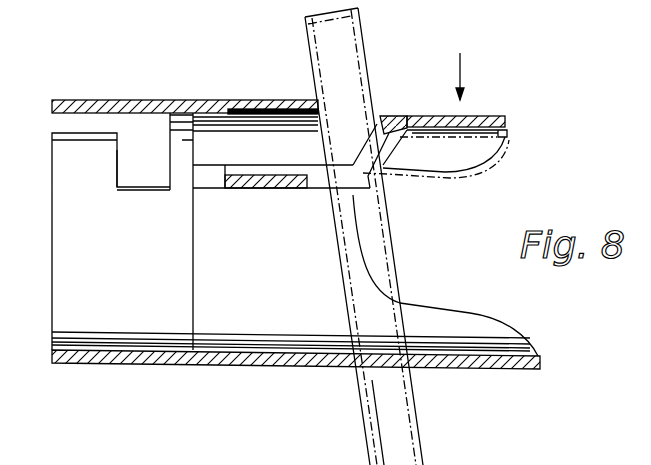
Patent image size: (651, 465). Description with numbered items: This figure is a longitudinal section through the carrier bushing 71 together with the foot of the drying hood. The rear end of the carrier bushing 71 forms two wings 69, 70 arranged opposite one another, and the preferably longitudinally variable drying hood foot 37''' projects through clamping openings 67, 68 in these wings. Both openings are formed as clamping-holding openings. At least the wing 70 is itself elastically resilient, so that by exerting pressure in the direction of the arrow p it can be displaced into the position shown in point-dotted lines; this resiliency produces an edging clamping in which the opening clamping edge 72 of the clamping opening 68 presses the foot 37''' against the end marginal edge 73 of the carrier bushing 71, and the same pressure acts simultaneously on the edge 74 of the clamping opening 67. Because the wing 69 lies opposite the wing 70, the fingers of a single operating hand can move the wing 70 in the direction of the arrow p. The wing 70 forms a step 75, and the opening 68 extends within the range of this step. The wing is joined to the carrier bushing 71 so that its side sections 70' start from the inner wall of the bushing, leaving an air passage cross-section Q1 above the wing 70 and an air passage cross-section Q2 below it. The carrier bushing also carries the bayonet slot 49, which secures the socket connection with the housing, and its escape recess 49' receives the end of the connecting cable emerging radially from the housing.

The bayonet slot 49 is at (101, 181).
The escape recess 49' is at (135, 210).
The carrier bushing 71 is at (151, 105).
The end marginal edge 73 is at (318, 105).
The air passage cross-section Q1 is at (278, 150).
The air passage cross-section Q2 is at (303, 270).
The clamping opening 68 is at (365, 172).
The opening clamping edge 72 is at (382, 115).
The wing 70 is at (489, 114).
The side sections 70' is at (272, 461).
The step 75 is at (363, 153).
The drying hood foot 37''' is at (338, 237).
The edge 74 is at (348, 365).
The clamping opening 67 is at (390, 366).
The wing 69 is at (520, 368).
The arrow p is at (458, 64).